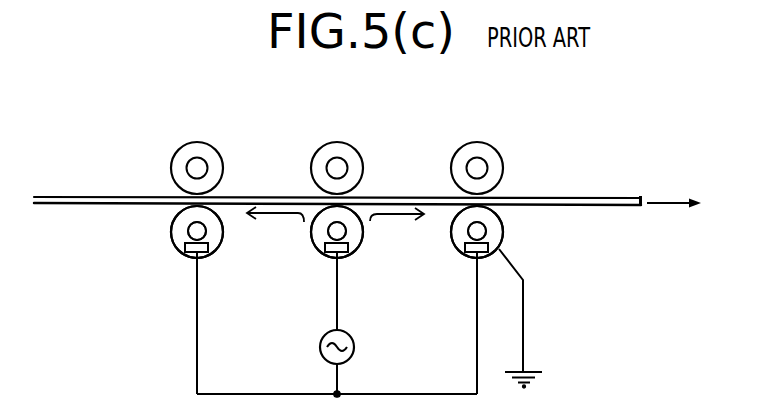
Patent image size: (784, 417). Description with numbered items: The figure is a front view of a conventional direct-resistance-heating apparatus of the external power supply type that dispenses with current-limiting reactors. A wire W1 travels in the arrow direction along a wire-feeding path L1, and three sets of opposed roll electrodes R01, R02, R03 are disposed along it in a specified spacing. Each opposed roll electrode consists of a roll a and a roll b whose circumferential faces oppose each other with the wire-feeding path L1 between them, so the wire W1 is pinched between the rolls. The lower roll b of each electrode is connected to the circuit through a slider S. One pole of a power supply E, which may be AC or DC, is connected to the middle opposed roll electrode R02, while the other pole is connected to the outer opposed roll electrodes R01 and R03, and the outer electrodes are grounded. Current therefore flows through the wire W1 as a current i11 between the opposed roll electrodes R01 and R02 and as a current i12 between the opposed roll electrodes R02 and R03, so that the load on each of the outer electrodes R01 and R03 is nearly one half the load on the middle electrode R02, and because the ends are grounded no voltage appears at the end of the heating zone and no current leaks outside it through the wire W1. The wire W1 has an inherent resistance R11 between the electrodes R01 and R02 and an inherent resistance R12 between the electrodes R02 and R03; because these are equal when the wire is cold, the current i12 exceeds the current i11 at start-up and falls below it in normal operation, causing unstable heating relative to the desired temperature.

The wire W1 is at (102, 195).
The roll a is at (175, 155).
The roll b is at (170, 227).
The slider S is at (190, 254).
The opposed roll electrode R01 is at (162, 234).
The opposed roll electrode R02 is at (302, 254).
The opposed roll electrode R03 is at (449, 254).
The inherent resistance R11 is at (266, 179).
The inherent resistance R12 is at (406, 179).
The current i11 is at (271, 231).
The current i12 is at (408, 232).
The power supply E is at (349, 360).
The wire-feeding path L1 is at (688, 204).